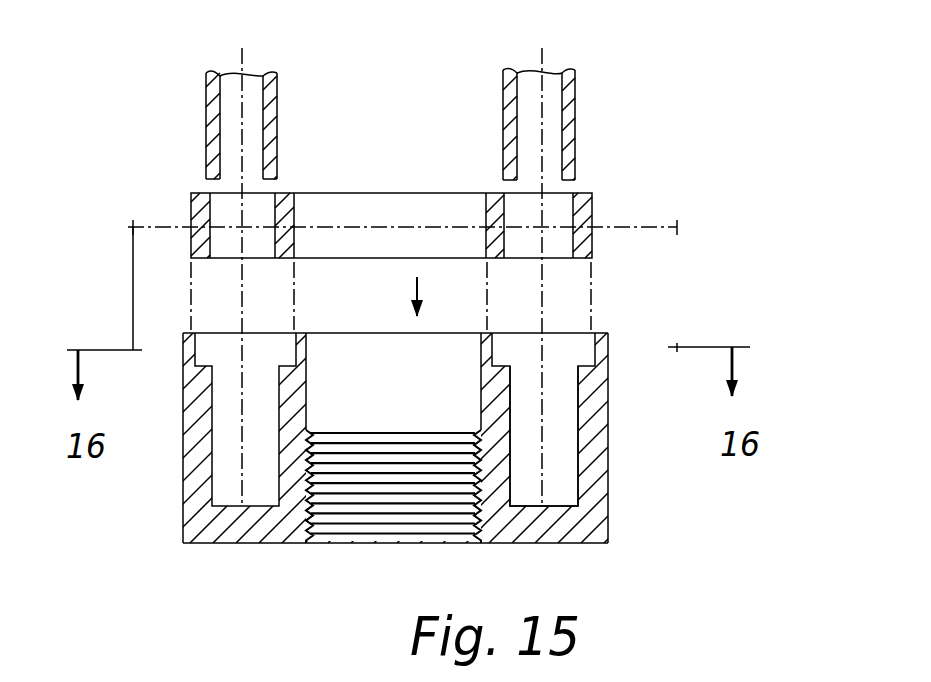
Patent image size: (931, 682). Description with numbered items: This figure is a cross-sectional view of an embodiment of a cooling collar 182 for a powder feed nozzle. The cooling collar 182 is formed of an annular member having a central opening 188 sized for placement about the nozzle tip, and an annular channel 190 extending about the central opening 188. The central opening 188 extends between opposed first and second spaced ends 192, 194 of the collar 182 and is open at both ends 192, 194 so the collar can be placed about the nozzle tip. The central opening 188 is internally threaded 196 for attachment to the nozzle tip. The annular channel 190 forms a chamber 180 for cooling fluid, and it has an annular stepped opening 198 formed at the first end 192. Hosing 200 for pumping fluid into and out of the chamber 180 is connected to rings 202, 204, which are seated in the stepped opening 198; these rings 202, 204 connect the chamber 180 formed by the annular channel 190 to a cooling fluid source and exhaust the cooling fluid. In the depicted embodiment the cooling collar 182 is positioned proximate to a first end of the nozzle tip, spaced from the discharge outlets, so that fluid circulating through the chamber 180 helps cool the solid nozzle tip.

The chamber 180 is at (603, 420).
The cooling collar 182 is at (628, 463).
The central opening 188 is at (310, 414).
The annular channel 190 is at (597, 362).
The first end 192 is at (599, 333).
The second end 194 is at (585, 541).
The internal threads 196 is at (317, 503).
The annular stepped opening 198 is at (294, 366).
The hosing 200 is at (206, 93).
The ring 202 is at (486, 166).
The ring 204 is at (614, 170).